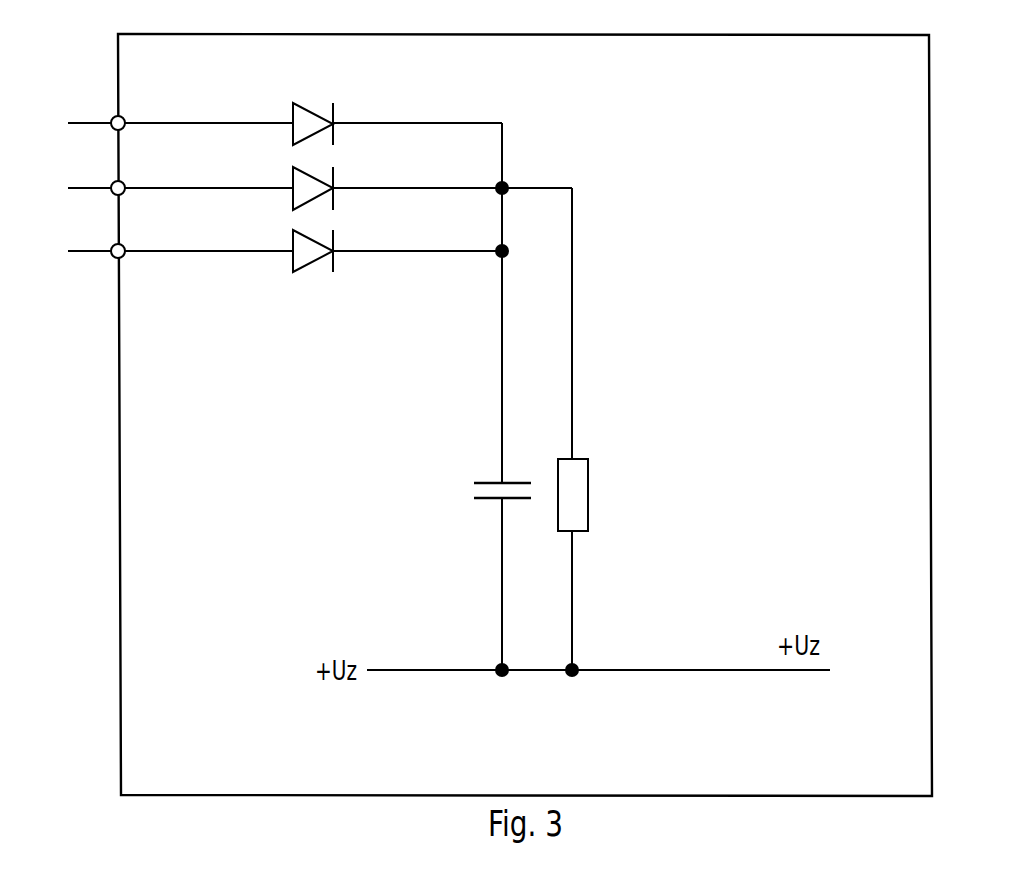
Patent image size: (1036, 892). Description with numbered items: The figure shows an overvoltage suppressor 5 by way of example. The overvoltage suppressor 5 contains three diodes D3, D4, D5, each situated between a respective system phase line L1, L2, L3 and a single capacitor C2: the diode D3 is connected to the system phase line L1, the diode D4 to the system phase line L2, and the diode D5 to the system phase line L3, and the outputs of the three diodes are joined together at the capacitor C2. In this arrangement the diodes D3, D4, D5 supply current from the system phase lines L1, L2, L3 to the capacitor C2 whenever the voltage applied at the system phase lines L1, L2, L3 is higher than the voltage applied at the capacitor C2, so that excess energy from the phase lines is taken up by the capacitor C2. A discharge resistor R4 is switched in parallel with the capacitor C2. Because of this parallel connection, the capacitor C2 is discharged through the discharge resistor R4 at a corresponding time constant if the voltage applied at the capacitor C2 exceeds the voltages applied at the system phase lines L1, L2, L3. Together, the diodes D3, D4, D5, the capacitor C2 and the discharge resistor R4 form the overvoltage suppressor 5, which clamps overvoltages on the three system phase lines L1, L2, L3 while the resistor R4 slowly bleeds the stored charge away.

The overvoltage suppressor 5 is at (931, 584).
The system phase line L1 is at (164, 124).
The system phase line L2 is at (164, 189).
The system phase line L3 is at (164, 252).
The diode D3 is at (397, 107).
The diode D4 is at (432, 177).
The diode D5 is at (397, 239).
The capacitor C2 is at (479, 400).
The discharge resistor R4 is at (592, 432).